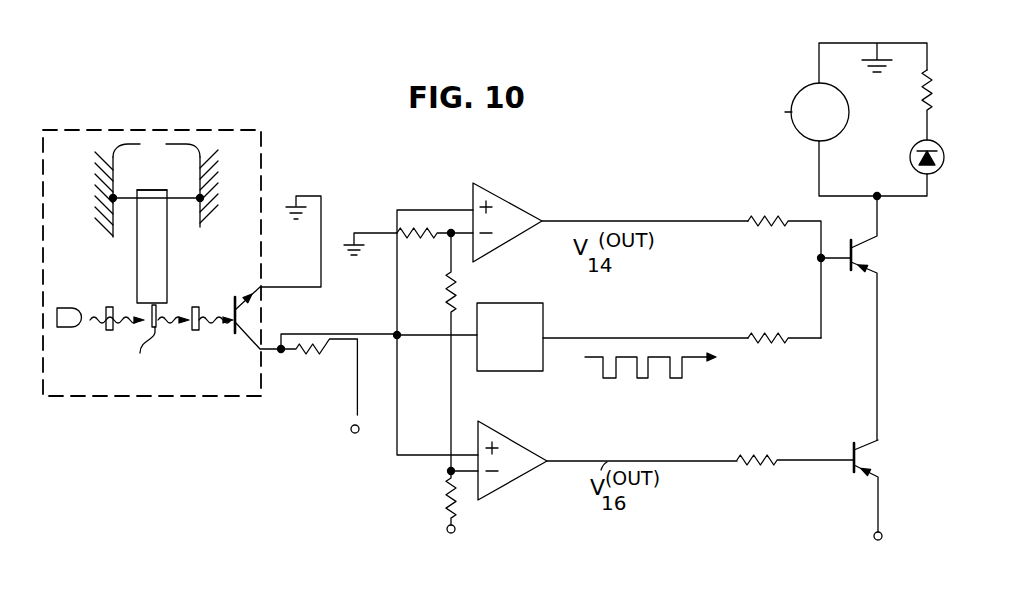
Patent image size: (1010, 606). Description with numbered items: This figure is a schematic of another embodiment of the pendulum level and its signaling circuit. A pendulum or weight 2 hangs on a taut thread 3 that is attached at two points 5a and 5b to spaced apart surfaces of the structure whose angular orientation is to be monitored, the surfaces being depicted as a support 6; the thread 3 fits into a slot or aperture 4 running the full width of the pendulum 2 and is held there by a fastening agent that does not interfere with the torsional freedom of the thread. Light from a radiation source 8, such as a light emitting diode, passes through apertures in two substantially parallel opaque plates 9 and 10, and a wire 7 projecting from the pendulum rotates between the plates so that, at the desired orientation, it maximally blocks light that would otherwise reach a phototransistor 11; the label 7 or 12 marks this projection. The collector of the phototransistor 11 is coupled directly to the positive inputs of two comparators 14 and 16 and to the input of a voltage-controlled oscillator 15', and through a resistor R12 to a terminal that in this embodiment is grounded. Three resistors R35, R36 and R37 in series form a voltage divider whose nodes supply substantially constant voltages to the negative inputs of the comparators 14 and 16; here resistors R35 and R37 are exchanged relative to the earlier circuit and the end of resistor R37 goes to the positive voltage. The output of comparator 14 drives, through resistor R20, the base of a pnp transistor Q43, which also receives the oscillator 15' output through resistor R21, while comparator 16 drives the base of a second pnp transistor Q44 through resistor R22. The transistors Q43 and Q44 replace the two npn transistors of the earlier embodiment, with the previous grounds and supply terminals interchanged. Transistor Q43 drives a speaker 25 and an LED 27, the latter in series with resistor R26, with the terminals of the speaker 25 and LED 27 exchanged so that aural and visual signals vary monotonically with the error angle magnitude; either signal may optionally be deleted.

The pendulum or weight 2 is at (157, 268).
The taut thread 3 is at (181, 200).
The slot or aperture 4 is at (152, 199).
The attachment point 5a is at (113, 198).
The attachment point 5b is at (200, 198).
The support frame 6 is at (156, 150).
The wire 7 is at (161, 346).
The aperture 12 is at (161, 346).
The radiation source 8 is at (70, 328).
The plate 9 is at (108, 331).
The plate 10 is at (194, 331).
The phototransistor 11 is at (242, 317).
The comparator 14 is at (512, 216).
The voltage-controlled oscillator 15' is at (612, 330).
The comparator 16 is at (514, 452).
The speaker 25 is at (835, 106).
The LED 27 is at (944, 152).
The resistor R12 is at (319, 400).
The resistor R20 is at (784, 277).
The resistor R21 is at (784, 358).
The resistor R22 is at (795, 479).
The resistor R26 is at (958, 105).
The resistor R35 is at (441, 512).
The resistor R36 is at (428, 352).
The resistor R37 is at (435, 248).
The pnp transistor Q43 is at (858, 256).
The pnp transistor Q44 is at (862, 460).